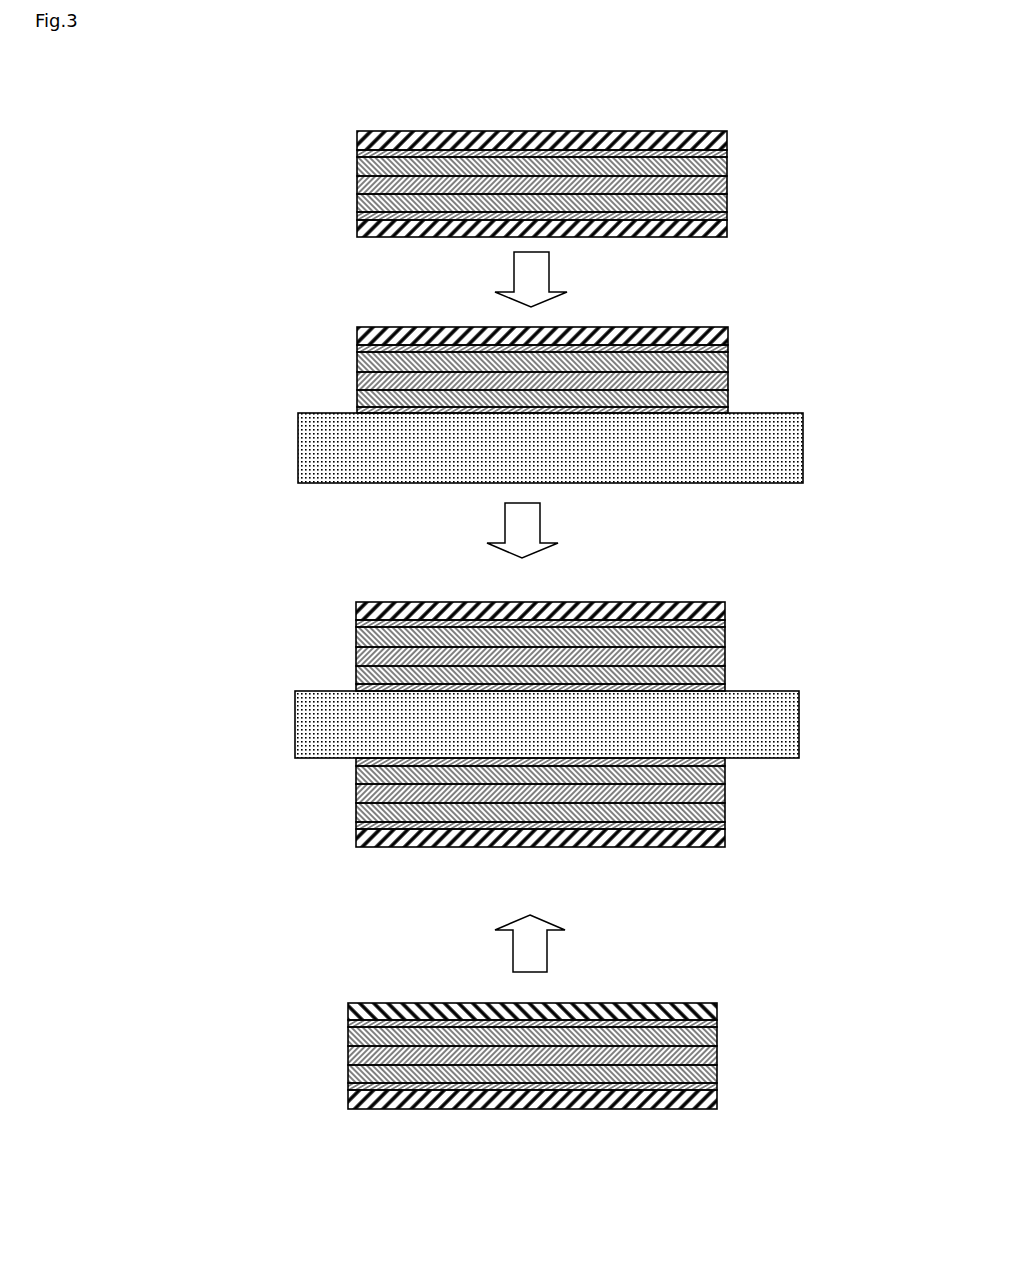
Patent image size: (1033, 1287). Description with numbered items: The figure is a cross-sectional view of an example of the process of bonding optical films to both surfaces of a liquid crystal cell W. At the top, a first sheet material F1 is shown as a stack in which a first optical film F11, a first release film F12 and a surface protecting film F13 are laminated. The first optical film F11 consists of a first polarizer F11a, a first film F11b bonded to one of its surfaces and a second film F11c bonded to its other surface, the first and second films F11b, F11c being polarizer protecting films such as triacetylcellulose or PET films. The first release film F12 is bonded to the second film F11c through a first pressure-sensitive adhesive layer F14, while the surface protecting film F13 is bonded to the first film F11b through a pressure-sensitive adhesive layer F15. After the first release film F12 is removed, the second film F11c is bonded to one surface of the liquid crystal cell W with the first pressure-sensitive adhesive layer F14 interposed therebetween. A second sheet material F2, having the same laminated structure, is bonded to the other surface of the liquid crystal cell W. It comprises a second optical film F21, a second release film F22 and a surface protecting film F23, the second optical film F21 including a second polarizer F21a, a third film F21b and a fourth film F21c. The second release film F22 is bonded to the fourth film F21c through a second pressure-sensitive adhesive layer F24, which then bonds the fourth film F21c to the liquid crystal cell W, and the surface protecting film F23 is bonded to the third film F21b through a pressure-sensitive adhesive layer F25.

The first sheet material F1 is at (503, 388).
The first optical film F11 is at (453, 405).
The first polarizer F11a is at (357, 185).
The first film F11b is at (357, 166).
The second film F11c is at (357, 203).
The first release film F12 is at (727, 228).
The surface protecting film F13 is at (727, 141).
The first pressure-sensitive adhesive layer F14 is at (357, 216).
The pressure-sensitive adhesive layer F15 is at (727, 153).
The liquid crystal cell W is at (803, 449).
The second sheet material F2 is at (491, 963).
The second optical film F21 is at (455, 932).
The second polarizer F21a is at (355, 794).
The third film F21b is at (355, 813).
The fourth film F21c is at (355, 775).
The second release film F22 is at (717, 1013).
The surface protecting film F23 is at (725, 840).
The second pressure-sensitive adhesive layer F24 is at (725, 762).
The pressure-sensitive adhesive layer F25 is at (355, 826).